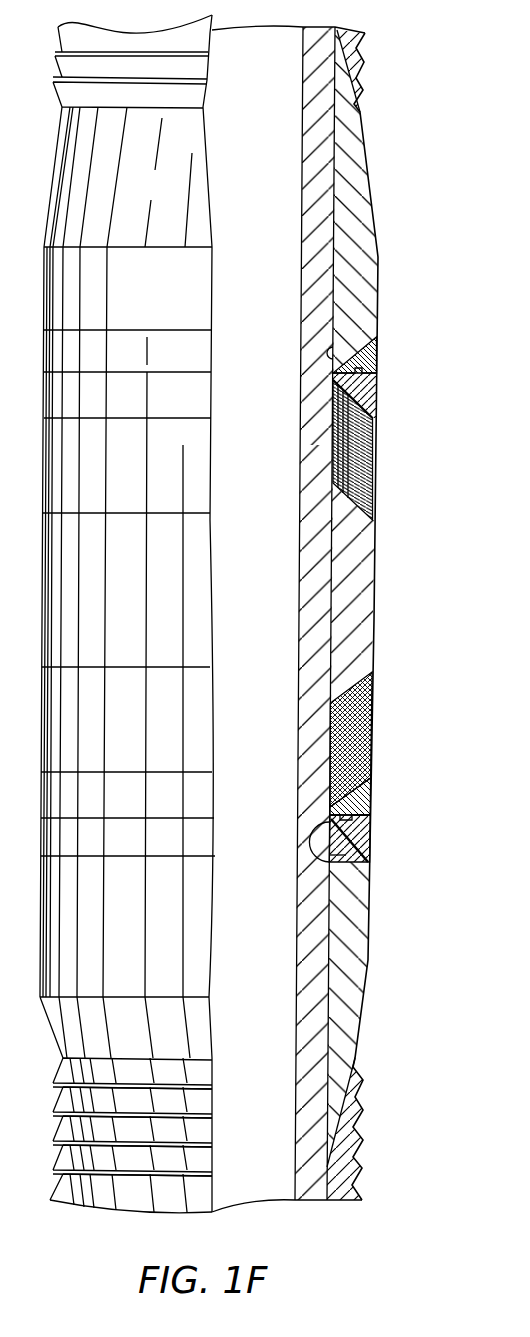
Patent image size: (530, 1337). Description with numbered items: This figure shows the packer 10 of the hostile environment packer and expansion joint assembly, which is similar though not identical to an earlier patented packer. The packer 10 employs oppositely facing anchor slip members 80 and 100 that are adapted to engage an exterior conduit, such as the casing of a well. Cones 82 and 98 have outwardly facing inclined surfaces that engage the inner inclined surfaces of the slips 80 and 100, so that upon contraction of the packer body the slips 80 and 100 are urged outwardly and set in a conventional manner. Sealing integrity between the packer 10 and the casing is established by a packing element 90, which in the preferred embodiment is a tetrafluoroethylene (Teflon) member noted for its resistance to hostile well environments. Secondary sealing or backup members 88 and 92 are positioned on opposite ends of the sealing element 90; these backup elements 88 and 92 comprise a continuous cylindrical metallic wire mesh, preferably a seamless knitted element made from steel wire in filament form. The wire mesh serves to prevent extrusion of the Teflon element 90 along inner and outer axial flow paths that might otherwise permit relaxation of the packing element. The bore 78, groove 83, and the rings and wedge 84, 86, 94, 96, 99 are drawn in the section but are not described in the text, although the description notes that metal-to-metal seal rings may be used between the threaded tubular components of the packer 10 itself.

The packer 10 is at (410, 196).
The central bore 78 is at (310, 407).
The anchor slip member 80 is at (357, 97).
The cone 82 is at (370, 283).
The groove 83 is at (348, 347).
The seal ring 84 is at (377, 358).
The backup ring 86 is at (367, 394).
The backup member 88 is at (377, 462).
The packing element 90 is at (360, 588).
The backup member 92 is at (370, 730).
The backup ring 94 is at (370, 803).
The seal ring 96 is at (370, 838).
The cone 98 is at (356, 943).
The lock ring 99 is at (368, 860).
The anchor slip member 100 is at (352, 1109).